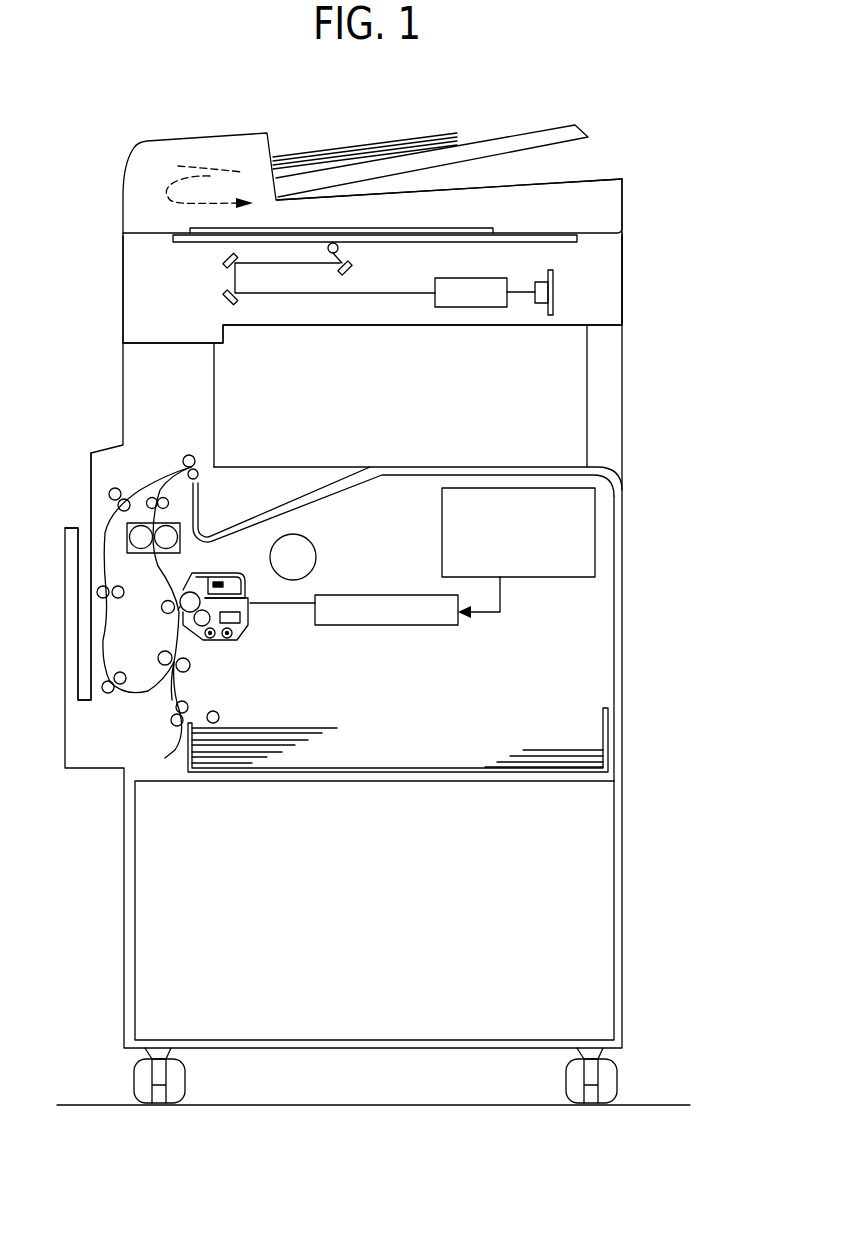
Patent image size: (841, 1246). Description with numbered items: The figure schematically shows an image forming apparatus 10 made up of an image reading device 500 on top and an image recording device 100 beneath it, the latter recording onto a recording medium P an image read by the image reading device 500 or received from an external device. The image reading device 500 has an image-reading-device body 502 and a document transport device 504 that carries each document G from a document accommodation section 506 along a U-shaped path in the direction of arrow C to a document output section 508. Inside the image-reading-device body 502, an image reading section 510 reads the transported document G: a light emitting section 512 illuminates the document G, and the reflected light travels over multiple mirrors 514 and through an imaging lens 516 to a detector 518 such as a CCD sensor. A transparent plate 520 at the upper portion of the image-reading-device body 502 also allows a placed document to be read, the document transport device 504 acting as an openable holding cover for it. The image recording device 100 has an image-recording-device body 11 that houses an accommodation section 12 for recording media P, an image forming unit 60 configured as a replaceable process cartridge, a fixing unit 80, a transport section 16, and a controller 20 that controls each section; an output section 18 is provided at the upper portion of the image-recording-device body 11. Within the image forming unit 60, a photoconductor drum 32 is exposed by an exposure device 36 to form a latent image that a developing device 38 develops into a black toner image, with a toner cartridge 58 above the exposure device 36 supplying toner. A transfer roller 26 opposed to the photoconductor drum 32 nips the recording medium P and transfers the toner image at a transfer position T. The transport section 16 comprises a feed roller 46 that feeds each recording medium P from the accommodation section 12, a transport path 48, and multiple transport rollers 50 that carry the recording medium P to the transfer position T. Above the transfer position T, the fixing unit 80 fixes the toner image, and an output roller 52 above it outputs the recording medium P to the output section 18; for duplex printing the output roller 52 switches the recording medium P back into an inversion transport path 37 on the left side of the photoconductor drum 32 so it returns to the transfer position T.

The image forming apparatus 10 is at (610, 112).
The image-recording-device body 11 is at (623, 547).
The accommodation section 12 is at (429, 721).
The transport section 16 is at (150, 705).
The output section 18 is at (290, 503).
The controller 20 is at (548, 568).
The transfer roller 26 is at (162, 608).
The photoconductor drum 32 is at (182, 596).
The exposure device 36 is at (393, 599).
The inversion transport path 37 is at (107, 562).
The developing device 38 is at (255, 641).
The feed roller 46 is at (219, 715).
The transport path 48 is at (173, 688).
The transport rollers 50 is at (176, 665).
The output roller 52 is at (189, 470).
The toner cartridge 58 is at (300, 542).
The image forming unit 60 is at (233, 560).
The fixing unit 80 is at (118, 532).
The image recording device 100 is at (449, 502).
The image reading device 500 is at (431, 230).
The image-reading-device body 502 is at (612, 278).
The document transport device 504 is at (612, 208).
The document accommodation section 506 is at (493, 141).
The document output section 508 is at (447, 182).
The image reading section 510 is at (346, 309).
The light emitting section 512 is at (333, 243).
The mirrors 514 is at (225, 297).
The imaging lens 516 is at (453, 283).
The detector 518 is at (537, 281).
The transparent plate 520 is at (518, 238).
The document G is at (373, 150).
The arrow indicating document transport direction C is at (206, 177).
The transfer position T is at (168, 622).
The recording medium P is at (447, 722).